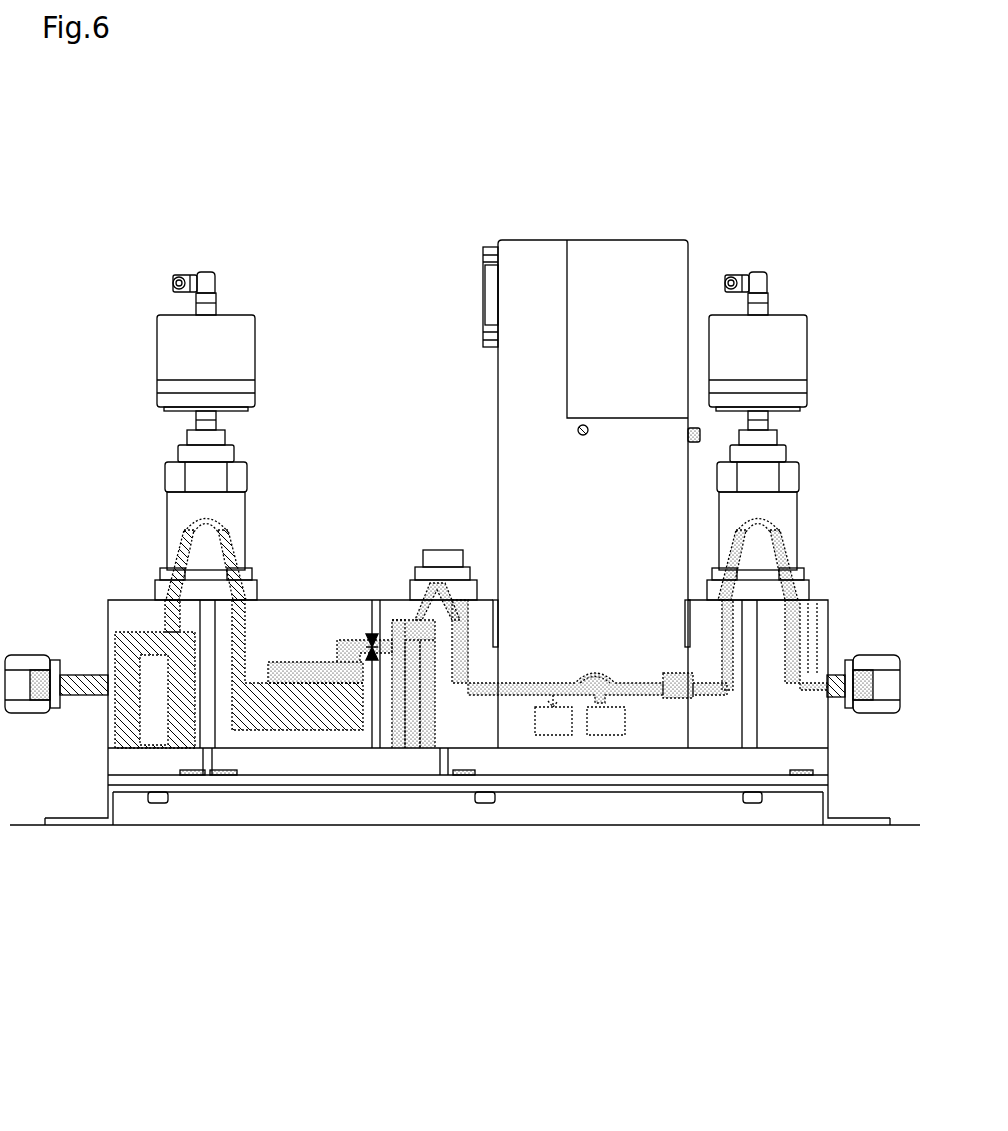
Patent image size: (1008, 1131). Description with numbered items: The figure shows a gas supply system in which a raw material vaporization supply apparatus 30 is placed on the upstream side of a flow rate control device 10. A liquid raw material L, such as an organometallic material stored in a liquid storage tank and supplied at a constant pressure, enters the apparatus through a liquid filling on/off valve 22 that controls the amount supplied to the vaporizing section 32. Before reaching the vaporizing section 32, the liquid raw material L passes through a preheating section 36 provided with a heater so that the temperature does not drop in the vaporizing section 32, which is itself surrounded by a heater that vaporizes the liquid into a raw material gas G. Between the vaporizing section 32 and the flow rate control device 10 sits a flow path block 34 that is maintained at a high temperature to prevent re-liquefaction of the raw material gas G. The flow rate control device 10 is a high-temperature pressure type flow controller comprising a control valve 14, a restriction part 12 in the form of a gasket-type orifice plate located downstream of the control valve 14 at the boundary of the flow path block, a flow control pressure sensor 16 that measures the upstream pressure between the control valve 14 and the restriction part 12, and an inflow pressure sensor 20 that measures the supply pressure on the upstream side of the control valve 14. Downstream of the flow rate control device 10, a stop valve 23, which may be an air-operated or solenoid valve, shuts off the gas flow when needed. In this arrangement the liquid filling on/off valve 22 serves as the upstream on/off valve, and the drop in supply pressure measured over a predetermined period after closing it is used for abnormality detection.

The flow rate control device 10 is at (612, 300).
The restriction part 12 is at (690, 700).
The control valve 14 is at (597, 669).
The flow control pressure sensor 16 is at (606, 736).
The inflow pressure sensor 20 is at (551, 736).
The liquid filling on/off valve 22 is at (173, 510).
The stop valve 23 is at (793, 535).
The raw material vaporization supply apparatus 30 is at (304, 447).
The vaporizing section 32 is at (296, 738).
The flow path block 34 is at (453, 548).
The preheating section 36 is at (148, 756).
The raw material gas G is at (455, 612).
The liquid raw material L is at (80, 697).